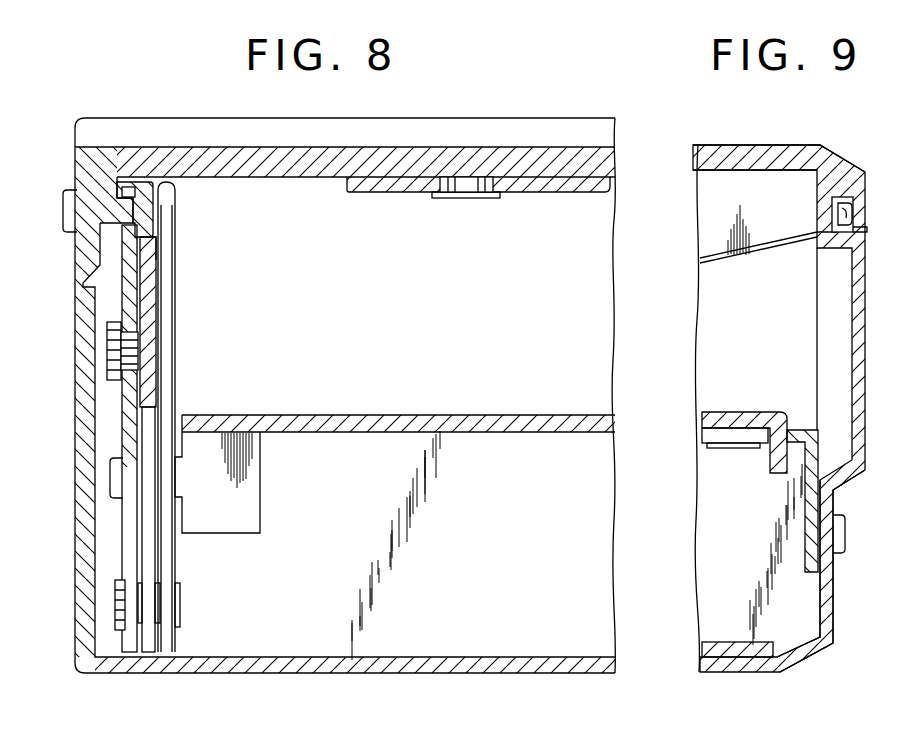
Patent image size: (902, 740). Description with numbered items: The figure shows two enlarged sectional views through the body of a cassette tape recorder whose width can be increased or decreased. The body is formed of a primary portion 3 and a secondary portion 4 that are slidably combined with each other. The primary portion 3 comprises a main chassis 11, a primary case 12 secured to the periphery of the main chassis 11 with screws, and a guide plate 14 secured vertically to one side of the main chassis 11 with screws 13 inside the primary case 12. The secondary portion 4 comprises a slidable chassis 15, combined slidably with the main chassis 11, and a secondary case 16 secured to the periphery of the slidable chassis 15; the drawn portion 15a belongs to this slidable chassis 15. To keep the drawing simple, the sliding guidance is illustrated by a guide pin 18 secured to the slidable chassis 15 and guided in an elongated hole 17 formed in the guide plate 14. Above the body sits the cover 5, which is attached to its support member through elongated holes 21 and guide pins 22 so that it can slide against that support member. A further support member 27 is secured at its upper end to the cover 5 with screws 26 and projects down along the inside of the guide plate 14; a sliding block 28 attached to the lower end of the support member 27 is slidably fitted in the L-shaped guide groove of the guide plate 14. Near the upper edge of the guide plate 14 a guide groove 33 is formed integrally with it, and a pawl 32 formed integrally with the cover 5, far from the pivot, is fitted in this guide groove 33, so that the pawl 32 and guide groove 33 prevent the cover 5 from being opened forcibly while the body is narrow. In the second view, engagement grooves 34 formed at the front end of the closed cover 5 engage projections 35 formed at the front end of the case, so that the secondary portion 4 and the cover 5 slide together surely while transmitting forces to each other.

In FIG. 8, the primary portion 3 is at (0, 690).
In FIG. 9, the secondary portion 4 is at (879, 412).
In FIG. 8, the cover 5 is at (322, 158).
In FIG. 9, the cover 5 is at (740, 150).
In FIG. 8, the main chassis 11 is at (583, 414).
In FIG. 9, the main chassis 11 is at (713, 413).
In FIG. 8, the primary case 12 is at (82, 530).
In FIG. 9, the primary case 12 is at (710, 647).
In FIG. 8, the screws 13 is at (115, 472).
In FIG. 8, the guide plate 14 is at (127, 423).
In FIG. 8, the slidable chassis 15 is at (151, 645).
In FIG. 9, the slidable chassis 15 is at (815, 513).
In FIG. 8, the bent portion of support plate 15a is at (145, 253).
In FIG. 9, the secondary case 16 is at (833, 592).
In FIG. 8, the elongated hole 17 is at (127, 357).
In FIG. 8, the guide pin 18 is at (127, 335).
In FIG. 8, the elongated holes 21 is at (473, 183).
In FIG. 8, the guide pins 22 is at (457, 183).
In FIG. 8, the screws 26 is at (65, 212).
In FIG. 8, the support member 27 is at (168, 230).
In FIG. 8, the sliding block 28 is at (122, 603).
In FIG. 8, the pawl 32 is at (125, 213).
In FIG. 8, the guide groove 33 is at (133, 190).
In FIG. 9, the engagement grooves 34 is at (858, 200).
In FIG. 9, the projections 35 is at (864, 226).